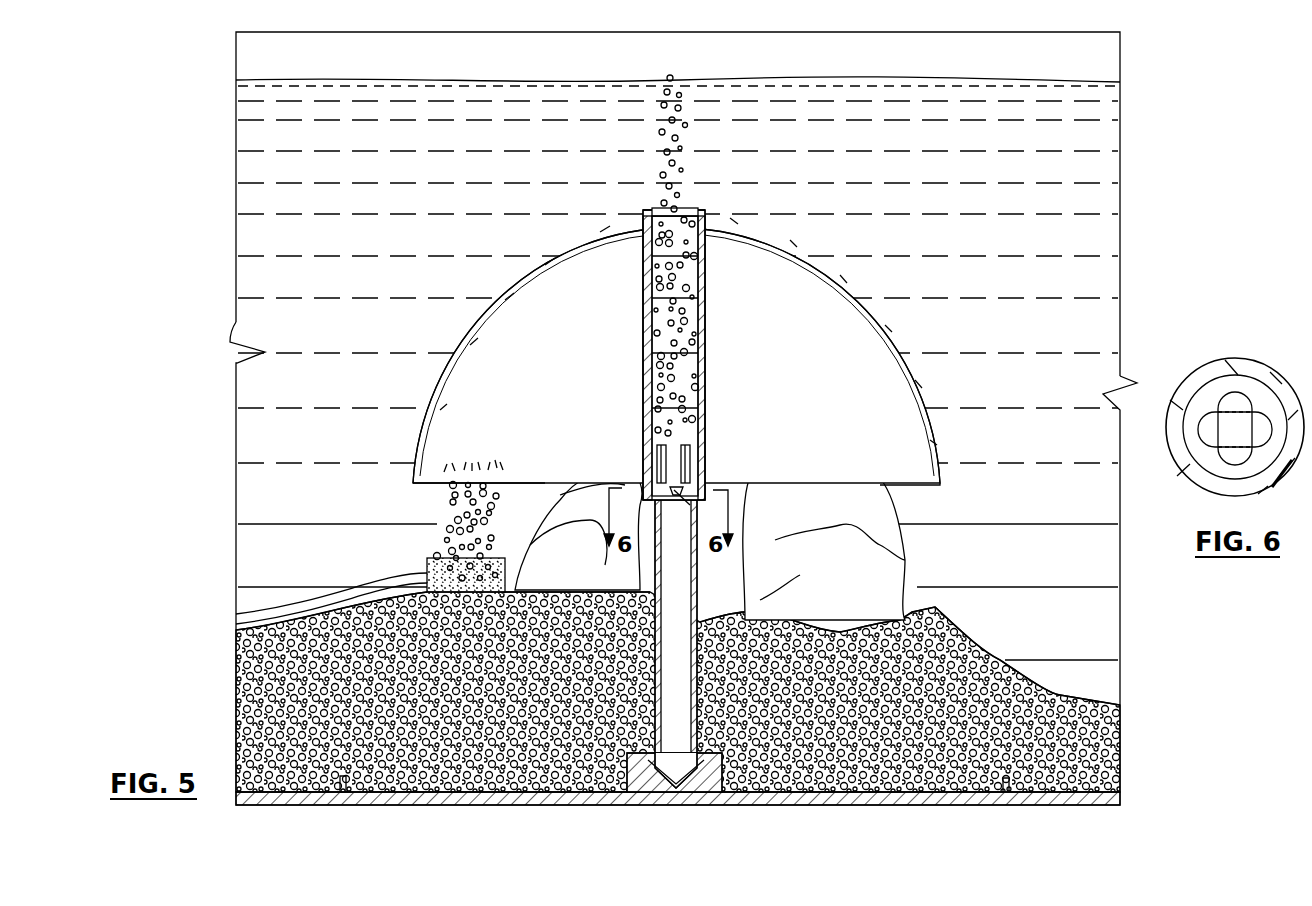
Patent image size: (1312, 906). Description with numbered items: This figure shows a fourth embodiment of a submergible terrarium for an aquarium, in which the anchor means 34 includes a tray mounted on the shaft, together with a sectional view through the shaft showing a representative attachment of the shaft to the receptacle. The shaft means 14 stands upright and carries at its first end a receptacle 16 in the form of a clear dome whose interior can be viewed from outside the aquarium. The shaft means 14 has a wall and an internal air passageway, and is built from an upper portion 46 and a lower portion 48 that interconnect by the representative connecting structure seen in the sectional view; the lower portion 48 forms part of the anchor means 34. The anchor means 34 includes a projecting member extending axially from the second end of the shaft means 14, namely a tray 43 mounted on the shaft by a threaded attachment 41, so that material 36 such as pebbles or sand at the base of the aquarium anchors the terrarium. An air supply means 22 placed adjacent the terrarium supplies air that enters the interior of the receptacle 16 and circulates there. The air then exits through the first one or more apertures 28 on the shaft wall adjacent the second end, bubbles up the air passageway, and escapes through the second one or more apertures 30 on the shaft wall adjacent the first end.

In FIG. 5, the shaft means 14 is at (743, 406).
In FIG. 6, the shaft means 14 is at (1196, 372).
In FIG. 5, the receptacle 16 is at (933, 381).
In FIG. 5, the air supply means 22 is at (430, 560).
In FIG. 5, the first one or more apertures 28 is at (690, 457).
In FIG. 5, the second one or more apertures 30 is at (700, 212).
In FIG. 5, the anchor means 34 is at (716, 657).
In FIG. 5, the material 36 is at (980, 652).
In FIG. 5, the threaded attachment 41 is at (684, 785).
In FIG. 5, the tray 43 is at (880, 790).
In FIG. 5, the upper portion 46 is at (707, 258).
In FIG. 5, the lower portion 48 is at (700, 588).